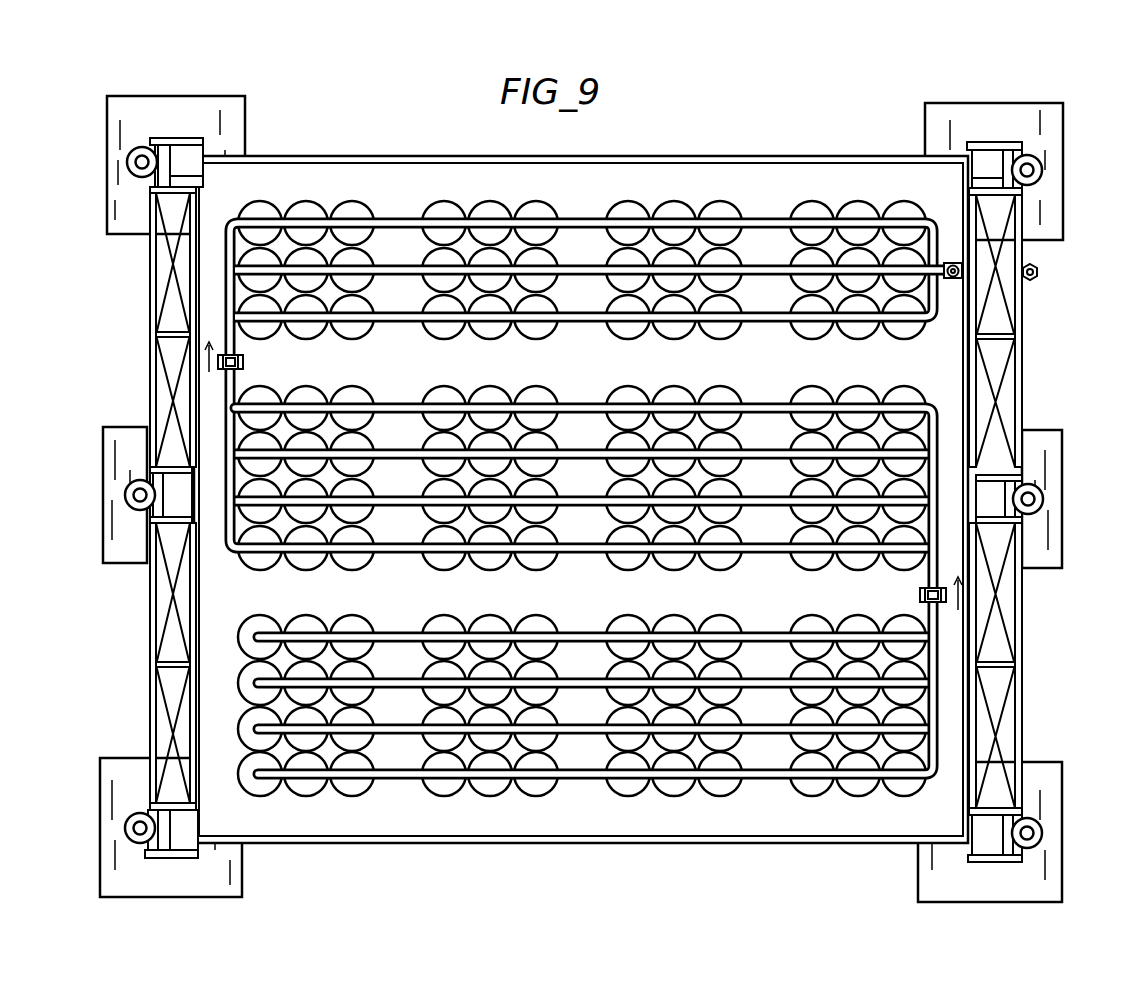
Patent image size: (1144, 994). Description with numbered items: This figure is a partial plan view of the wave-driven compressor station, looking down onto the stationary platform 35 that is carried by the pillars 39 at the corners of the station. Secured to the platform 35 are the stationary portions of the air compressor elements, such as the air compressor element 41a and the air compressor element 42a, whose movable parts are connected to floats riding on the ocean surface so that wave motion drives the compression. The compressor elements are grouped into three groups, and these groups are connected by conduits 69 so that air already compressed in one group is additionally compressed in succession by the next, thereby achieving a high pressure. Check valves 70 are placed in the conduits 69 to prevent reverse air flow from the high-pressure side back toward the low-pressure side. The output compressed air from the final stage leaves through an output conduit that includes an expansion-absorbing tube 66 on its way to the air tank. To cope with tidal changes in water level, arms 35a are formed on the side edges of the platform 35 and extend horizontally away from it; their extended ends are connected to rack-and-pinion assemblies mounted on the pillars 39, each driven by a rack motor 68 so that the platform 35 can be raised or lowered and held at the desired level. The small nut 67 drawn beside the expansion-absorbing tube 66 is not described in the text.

The stationary platform 35 is at (597, 847).
The arms 35a is at (987, 162).
The pillars 39 is at (1005, 142).
The rack motor 68 is at (1042, 180).
The nut 67 is at (1040, 277).
The expansion-absorbing tube 66 is at (960, 277).
The conduits 69 is at (232, 305).
The check valves 70 is at (213, 365).
The air compressor element 41a is at (265, 793).
The air compressor element 42a is at (310, 791).